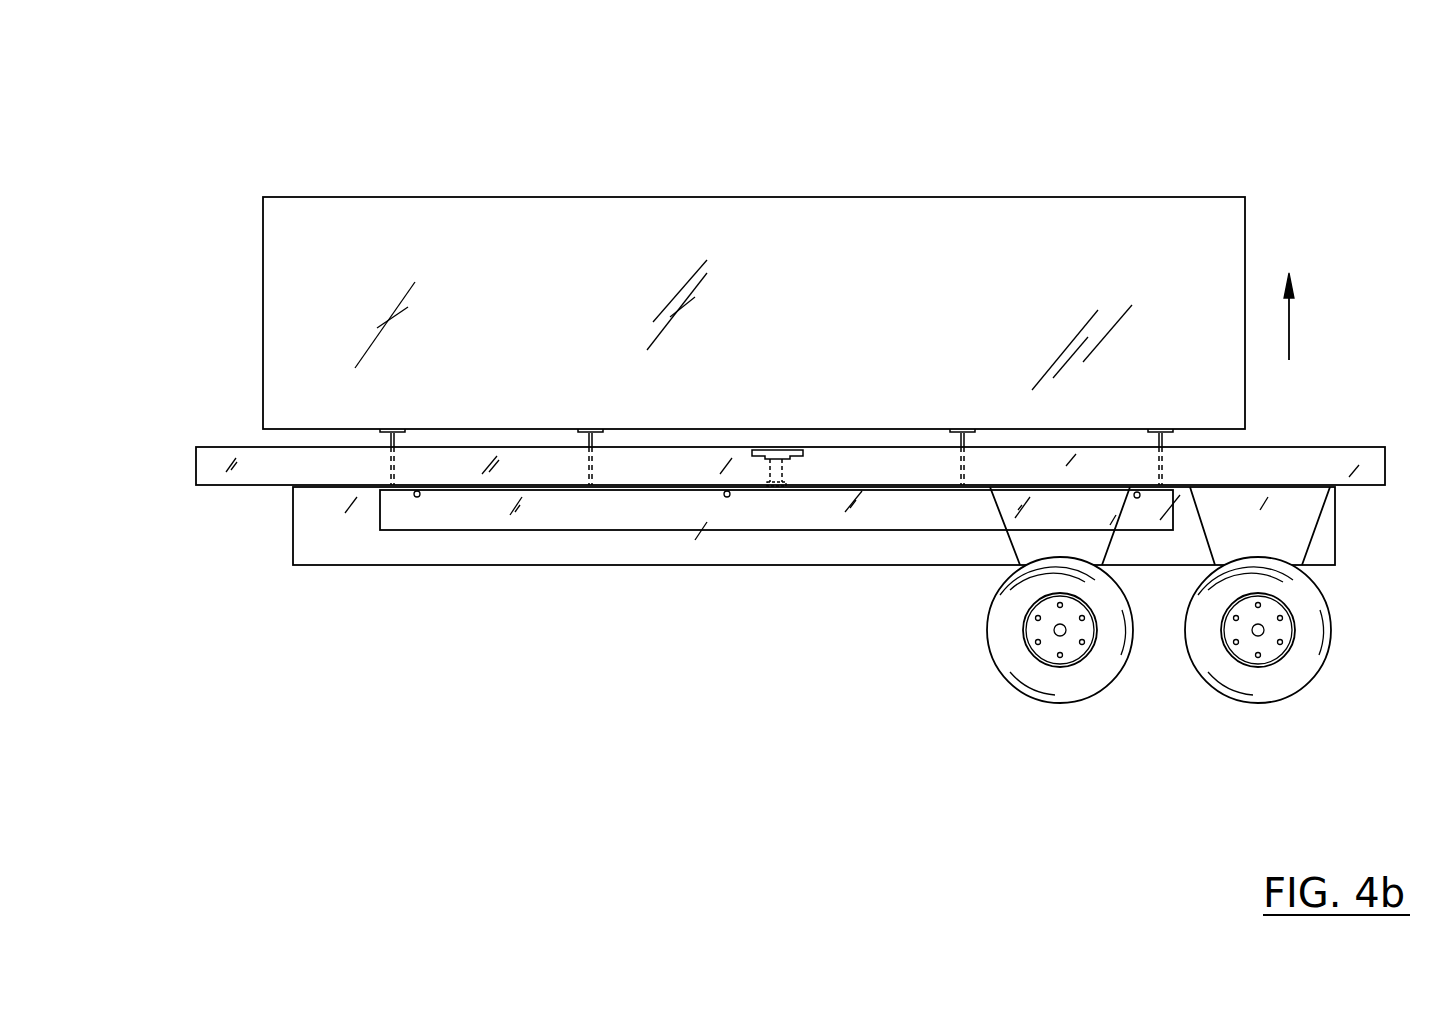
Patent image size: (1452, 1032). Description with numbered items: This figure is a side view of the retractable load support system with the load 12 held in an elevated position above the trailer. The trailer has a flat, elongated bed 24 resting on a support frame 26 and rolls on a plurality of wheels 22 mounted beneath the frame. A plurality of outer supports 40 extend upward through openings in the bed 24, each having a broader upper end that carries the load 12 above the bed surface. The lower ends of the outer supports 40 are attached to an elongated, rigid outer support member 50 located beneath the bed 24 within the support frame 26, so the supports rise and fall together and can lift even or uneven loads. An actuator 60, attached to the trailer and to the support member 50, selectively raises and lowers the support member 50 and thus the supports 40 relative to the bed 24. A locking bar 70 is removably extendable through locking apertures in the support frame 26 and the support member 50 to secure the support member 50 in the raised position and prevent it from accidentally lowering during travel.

The load 12 is at (495, 233).
The wheels 22 is at (1240, 695).
The bed 24 is at (225, 447).
The support frame 26 is at (310, 533).
The outer supports 40 is at (590, 434).
The outer support members 50 is at (590, 512).
The actuator 60 is at (780, 470).
The locking bar 70 is at (417, 497).